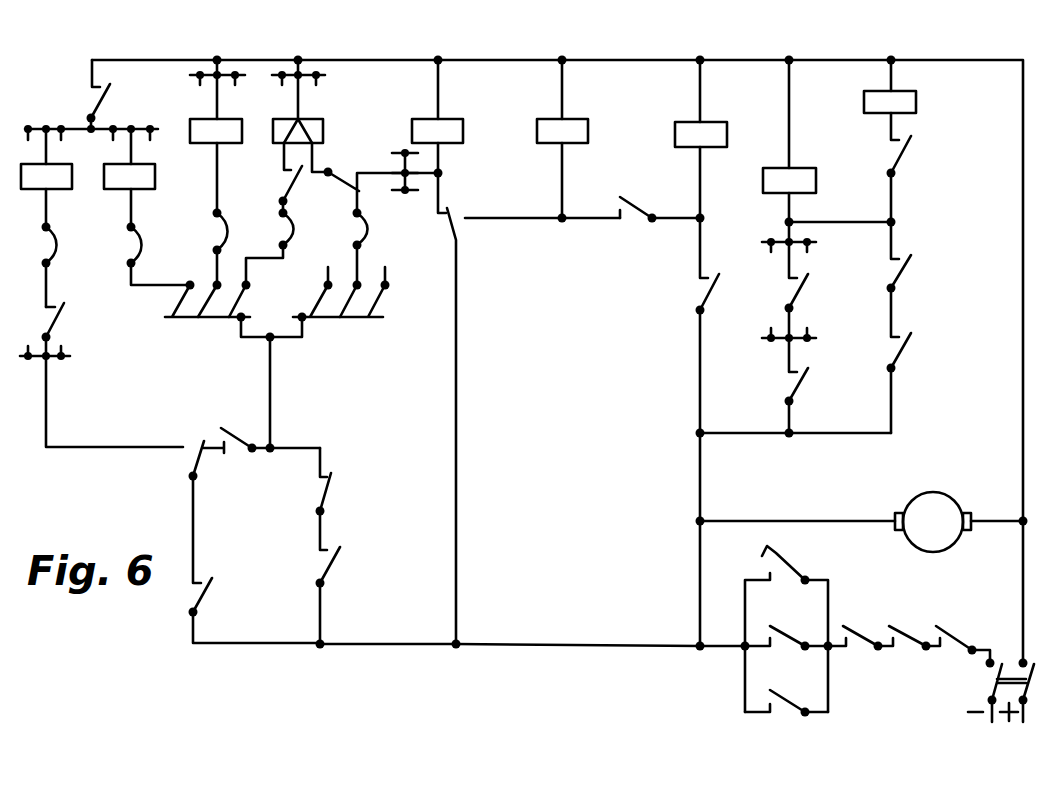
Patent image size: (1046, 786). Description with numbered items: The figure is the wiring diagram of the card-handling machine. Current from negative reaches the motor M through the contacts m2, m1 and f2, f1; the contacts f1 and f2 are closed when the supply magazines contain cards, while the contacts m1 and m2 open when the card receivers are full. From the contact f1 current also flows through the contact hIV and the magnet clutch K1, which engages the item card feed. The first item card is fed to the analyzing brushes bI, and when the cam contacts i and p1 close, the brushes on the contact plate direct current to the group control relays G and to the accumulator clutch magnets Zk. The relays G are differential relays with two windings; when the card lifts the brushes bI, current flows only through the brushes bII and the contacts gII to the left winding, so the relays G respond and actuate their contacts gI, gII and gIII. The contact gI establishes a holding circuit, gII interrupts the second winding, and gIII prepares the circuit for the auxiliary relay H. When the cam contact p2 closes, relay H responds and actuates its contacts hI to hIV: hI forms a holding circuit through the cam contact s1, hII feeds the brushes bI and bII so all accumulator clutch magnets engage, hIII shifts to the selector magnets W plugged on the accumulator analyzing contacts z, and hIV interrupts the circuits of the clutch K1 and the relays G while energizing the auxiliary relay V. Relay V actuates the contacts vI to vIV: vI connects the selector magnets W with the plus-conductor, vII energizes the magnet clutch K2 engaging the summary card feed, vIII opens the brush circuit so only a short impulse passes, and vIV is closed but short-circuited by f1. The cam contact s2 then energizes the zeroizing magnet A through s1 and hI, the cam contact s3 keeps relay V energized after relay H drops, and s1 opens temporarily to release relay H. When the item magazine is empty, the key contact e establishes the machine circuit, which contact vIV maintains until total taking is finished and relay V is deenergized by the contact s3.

The contact v I vI is at (106, 94).
The selector magnets W is at (105, 216).
The accumulator analyzing contacts z is at (101, 375).
The accumulator clutch magnet Zk is at (239, 188).
The group control relay G is at (323, 103).
The contact g I gI is at (365, 230).
The contact g II gII is at (281, 230).
The contact g III gIII is at (805, 323).
The analyzing brushes b I bI is at (368, 293).
The analyzing brushes b II bII is at (235, 356).
The magnet clutch K1 is at (449, 136).
The magnet clutch K2 is at (716, 169).
The auxiliary relay V is at (573, 141).
The auxiliary relay H is at (826, 169).
The magnet A is at (900, 100).
The contact h I hI is at (907, 296).
The contact h II hII is at (508, 598).
The contact h III hIII is at (203, 500).
The contact h IV hIV is at (533, 415).
The cam contact s1 is at (906, 383).
The cam contact s2 is at (910, 197).
The cam contact s3 is at (660, 205).
The contact v II vII is at (719, 462).
The contact v III vIII is at (337, 499).
The contact v IV vIV is at (786, 698).
The cam contact p1 is at (270, 427).
The cam contact p2 is at (795, 403).
The impulse contact i is at (255, 610).
The contact e is at (764, 626).
The contact f1 is at (789, 630).
The contact f2 is at (860, 628).
The contact m1 is at (914, 629).
The contact m2 is at (963, 635).
The motor M is at (864, 522).